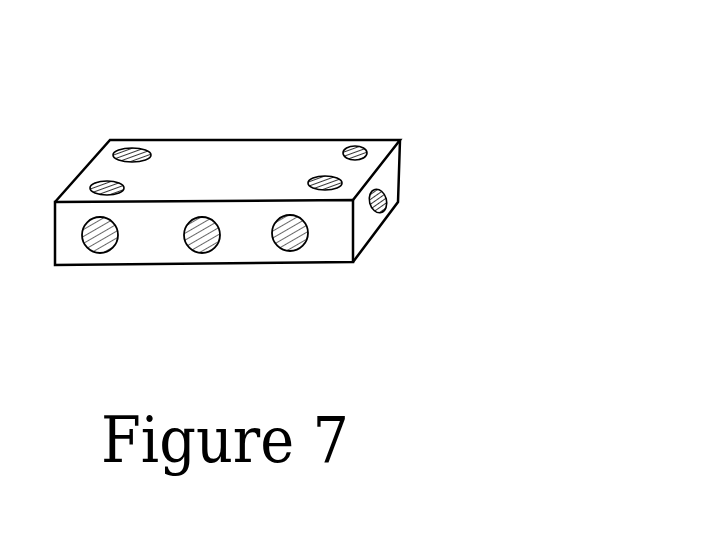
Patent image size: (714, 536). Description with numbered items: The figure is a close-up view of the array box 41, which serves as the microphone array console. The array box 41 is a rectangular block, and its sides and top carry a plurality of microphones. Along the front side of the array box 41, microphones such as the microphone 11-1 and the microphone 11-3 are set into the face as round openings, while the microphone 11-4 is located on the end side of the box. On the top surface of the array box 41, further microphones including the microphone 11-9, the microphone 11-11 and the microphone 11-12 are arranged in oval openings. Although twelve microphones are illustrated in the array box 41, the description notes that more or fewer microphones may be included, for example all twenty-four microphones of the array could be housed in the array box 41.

The array box 41 is at (248, 84).
The microphone 11-1 is at (104, 253).
The microphone 11-3 is at (298, 249).
The microphone 11-4 is at (387, 206).
The microphone 11-9 is at (124, 188).
The microphone 11-11 is at (343, 152).
The microphone 11-12 is at (151, 155).